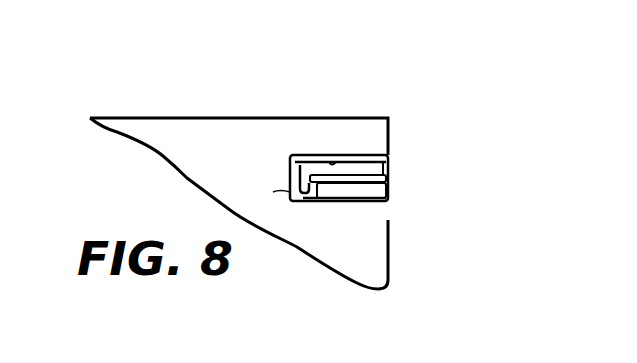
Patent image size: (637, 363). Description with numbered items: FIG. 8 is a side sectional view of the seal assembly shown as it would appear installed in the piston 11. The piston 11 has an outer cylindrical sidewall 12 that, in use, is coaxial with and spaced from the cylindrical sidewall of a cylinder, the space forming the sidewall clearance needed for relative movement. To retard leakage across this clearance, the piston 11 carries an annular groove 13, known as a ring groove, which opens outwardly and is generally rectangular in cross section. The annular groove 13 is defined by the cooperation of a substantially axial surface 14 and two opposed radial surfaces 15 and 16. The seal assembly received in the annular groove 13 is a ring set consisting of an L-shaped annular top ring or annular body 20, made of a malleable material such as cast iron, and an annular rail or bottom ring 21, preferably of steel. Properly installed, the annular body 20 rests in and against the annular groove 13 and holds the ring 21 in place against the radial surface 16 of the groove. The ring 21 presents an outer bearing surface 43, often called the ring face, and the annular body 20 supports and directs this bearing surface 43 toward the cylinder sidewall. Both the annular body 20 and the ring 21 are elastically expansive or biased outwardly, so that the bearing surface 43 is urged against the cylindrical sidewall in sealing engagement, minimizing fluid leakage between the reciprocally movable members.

The piston 11 is at (396, 267).
The outer cylindrical sidewall 12 is at (393, 242).
The annular groove 13 is at (313, 153).
The axial surface 14 is at (301, 154).
The radial surface 15 is at (341, 157).
The radial surface 16 is at (323, 194).
The annular body 20 is at (362, 169).
The ring 21 is at (358, 202).
The bearing surface 43 is at (385, 192).